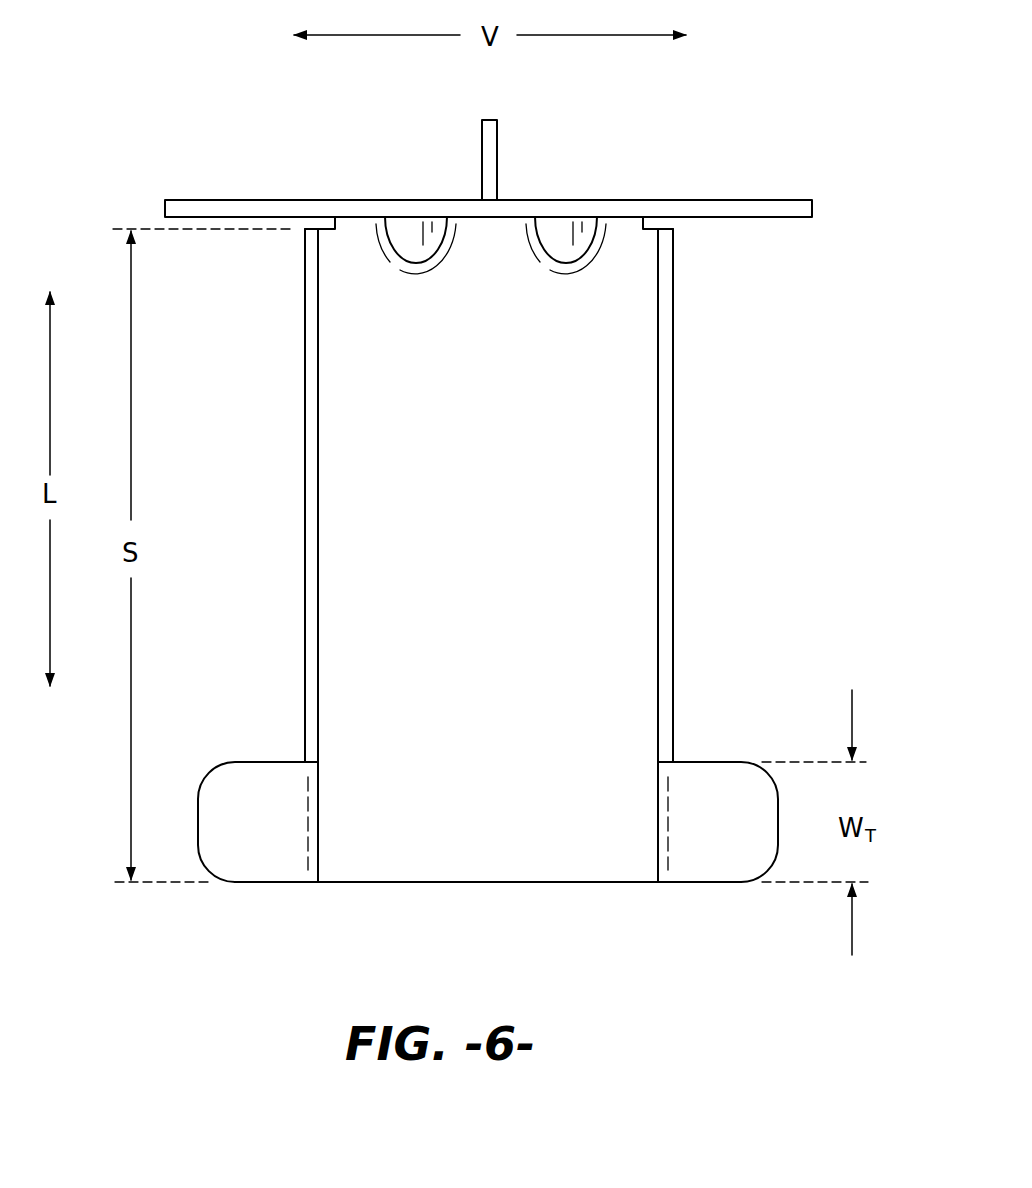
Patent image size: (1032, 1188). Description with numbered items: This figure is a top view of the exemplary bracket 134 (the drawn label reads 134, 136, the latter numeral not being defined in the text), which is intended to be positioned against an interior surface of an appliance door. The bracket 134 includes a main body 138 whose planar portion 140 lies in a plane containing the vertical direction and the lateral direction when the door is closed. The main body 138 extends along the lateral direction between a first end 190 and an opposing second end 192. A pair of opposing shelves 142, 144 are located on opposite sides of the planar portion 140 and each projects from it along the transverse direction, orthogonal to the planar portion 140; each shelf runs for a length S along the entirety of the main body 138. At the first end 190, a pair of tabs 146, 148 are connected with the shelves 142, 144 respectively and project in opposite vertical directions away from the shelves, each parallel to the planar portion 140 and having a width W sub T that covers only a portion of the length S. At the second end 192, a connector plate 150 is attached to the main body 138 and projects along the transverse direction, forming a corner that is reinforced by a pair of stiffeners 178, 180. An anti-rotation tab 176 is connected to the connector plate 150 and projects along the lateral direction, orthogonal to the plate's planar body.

The bracket 134 is at (200, 140).
The fastener assembly 136 is at (519, 526).
The main body 138 is at (588, 498).
The planar portion 140 is at (510, 676).
The shelf 142 is at (675, 380).
The shelf 144 is at (303, 380).
The tab 146 is at (710, 787).
The tab 148 is at (266, 790).
The connector plate 150 is at (812, 209).
The anti-rotation tab 176 is at (497, 150).
The stiffener 178 is at (400, 246).
The stiffener 180 is at (546, 243).
The first end 190 is at (663, 900).
The second end 192 is at (693, 233).